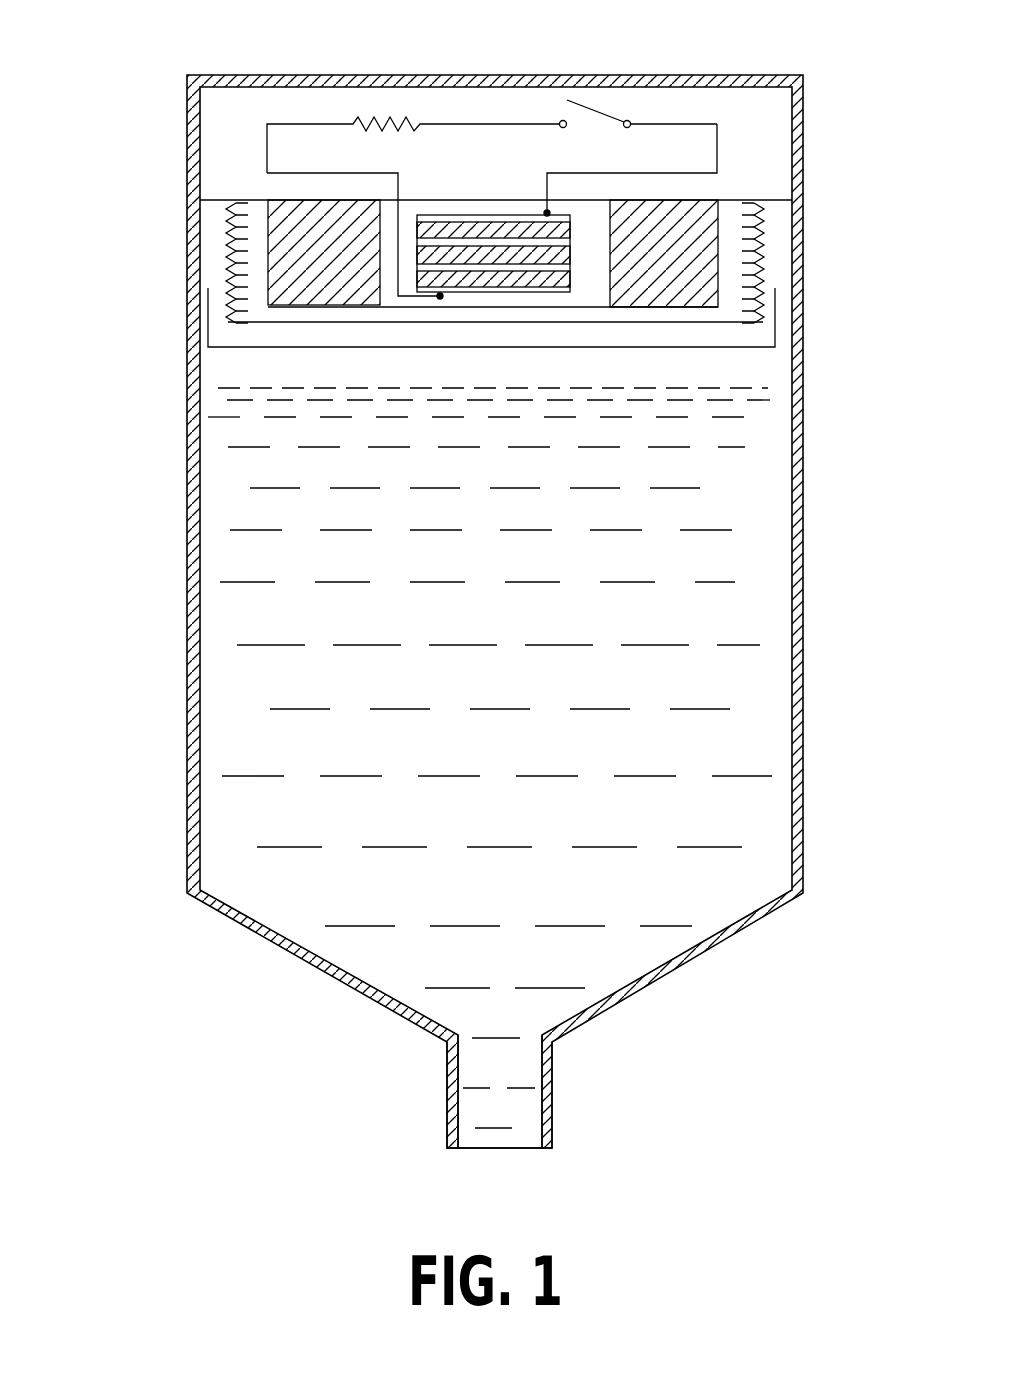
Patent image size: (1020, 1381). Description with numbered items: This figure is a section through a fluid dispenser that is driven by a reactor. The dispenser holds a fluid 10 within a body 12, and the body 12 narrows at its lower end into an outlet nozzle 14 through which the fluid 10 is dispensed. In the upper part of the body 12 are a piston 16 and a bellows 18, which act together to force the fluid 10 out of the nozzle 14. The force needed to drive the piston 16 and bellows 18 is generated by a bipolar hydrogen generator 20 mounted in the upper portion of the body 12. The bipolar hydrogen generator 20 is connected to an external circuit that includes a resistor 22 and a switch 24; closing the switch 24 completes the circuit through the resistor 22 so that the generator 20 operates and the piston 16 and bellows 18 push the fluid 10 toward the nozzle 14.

The fluid 10 is at (497, 758).
The body 12 is at (803, 610).
The outlet nozzle 14 is at (552, 1090).
The piston 16 is at (775, 318).
The bellows 18 is at (763, 243).
The bipolar hydrogen generator 20 is at (514, 214).
The resistor 22 is at (380, 118).
The switch 24 is at (590, 107).